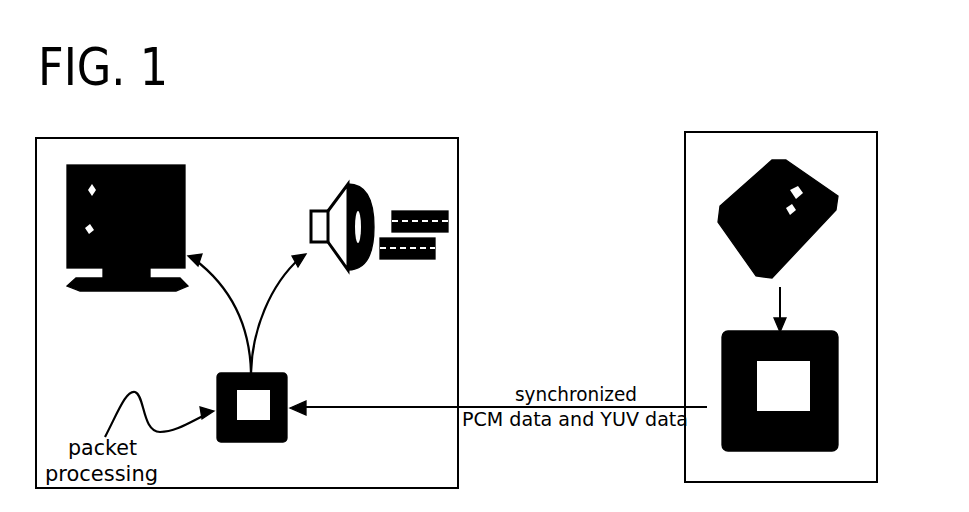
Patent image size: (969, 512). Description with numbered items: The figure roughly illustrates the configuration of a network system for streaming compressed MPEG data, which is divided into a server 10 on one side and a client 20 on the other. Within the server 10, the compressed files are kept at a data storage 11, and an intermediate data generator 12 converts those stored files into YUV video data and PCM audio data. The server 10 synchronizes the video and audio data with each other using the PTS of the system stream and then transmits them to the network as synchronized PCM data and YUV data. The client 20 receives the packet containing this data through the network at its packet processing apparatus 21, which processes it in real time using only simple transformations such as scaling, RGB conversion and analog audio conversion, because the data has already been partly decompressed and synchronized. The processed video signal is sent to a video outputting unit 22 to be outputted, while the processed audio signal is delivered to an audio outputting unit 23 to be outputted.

The server 10 is at (848, 132).
The data storage 11 is at (807, 238).
The intermediate data generator 12 is at (818, 333).
The client 20 is at (411, 138).
The packet processing apparatus 21 is at (287, 392).
The video outputting unit 22 is at (185, 186).
The audio outputting unit 23 is at (372, 197).